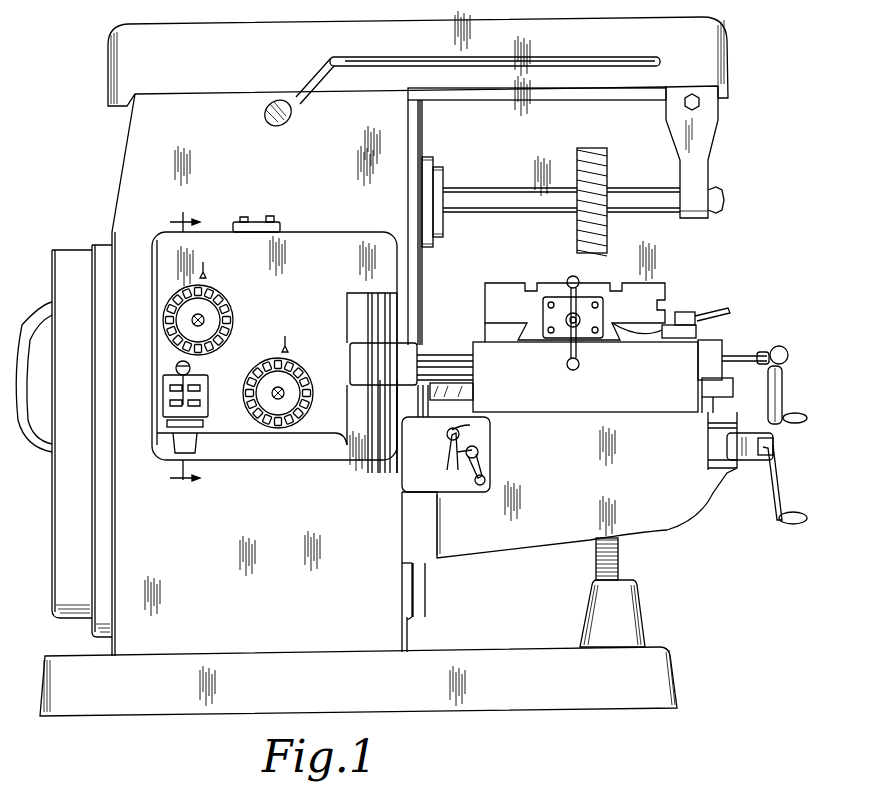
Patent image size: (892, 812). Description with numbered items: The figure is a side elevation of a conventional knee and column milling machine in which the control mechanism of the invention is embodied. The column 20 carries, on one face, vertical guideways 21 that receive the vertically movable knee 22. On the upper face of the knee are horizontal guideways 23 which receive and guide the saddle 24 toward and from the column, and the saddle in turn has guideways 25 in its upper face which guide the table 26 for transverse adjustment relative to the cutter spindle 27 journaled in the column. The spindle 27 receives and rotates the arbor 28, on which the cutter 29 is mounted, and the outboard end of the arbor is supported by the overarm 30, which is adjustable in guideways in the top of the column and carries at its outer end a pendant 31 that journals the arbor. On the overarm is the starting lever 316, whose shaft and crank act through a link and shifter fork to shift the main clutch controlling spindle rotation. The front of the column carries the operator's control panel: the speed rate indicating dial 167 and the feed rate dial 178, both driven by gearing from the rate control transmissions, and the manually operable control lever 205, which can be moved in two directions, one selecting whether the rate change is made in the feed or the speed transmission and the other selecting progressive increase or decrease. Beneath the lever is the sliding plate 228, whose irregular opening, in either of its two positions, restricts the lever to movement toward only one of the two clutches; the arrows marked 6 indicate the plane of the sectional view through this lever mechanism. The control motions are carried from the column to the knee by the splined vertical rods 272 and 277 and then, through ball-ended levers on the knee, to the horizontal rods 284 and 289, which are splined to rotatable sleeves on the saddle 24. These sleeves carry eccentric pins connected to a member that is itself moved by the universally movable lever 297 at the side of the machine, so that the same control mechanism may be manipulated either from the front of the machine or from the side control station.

The column 20 is at (135, 133).
The guideways 21 is at (420, 290).
The knee 22 is at (690, 506).
The horizontal guideways 23 is at (712, 405).
The saddle 24 is at (700, 340).
The guideways 25 is at (666, 322).
The table 26 is at (640, 290).
The cutter spindle 27 is at (436, 218).
The arbor 28 is at (520, 193).
The cutter 29 is at (608, 160).
The overarm 30 is at (705, 63).
The pendant 31 is at (706, 126).
The starting lever 316 is at (362, 62).
The speed rate indicating dial 167 is at (230, 317).
The feed rate dial 178 is at (272, 356).
The control lever 205 is at (192, 366).
The sliding plate 228 is at (200, 428).
The vertically rotatable rod 272 is at (363, 465).
The second vertical rod 277 is at (386, 478).
The horizontal rod 284 is at (455, 368).
The second horizontal rod 289 is at (440, 356).
The universally movable lever 297 is at (748, 358).
The section line 6 is at (192, 349).